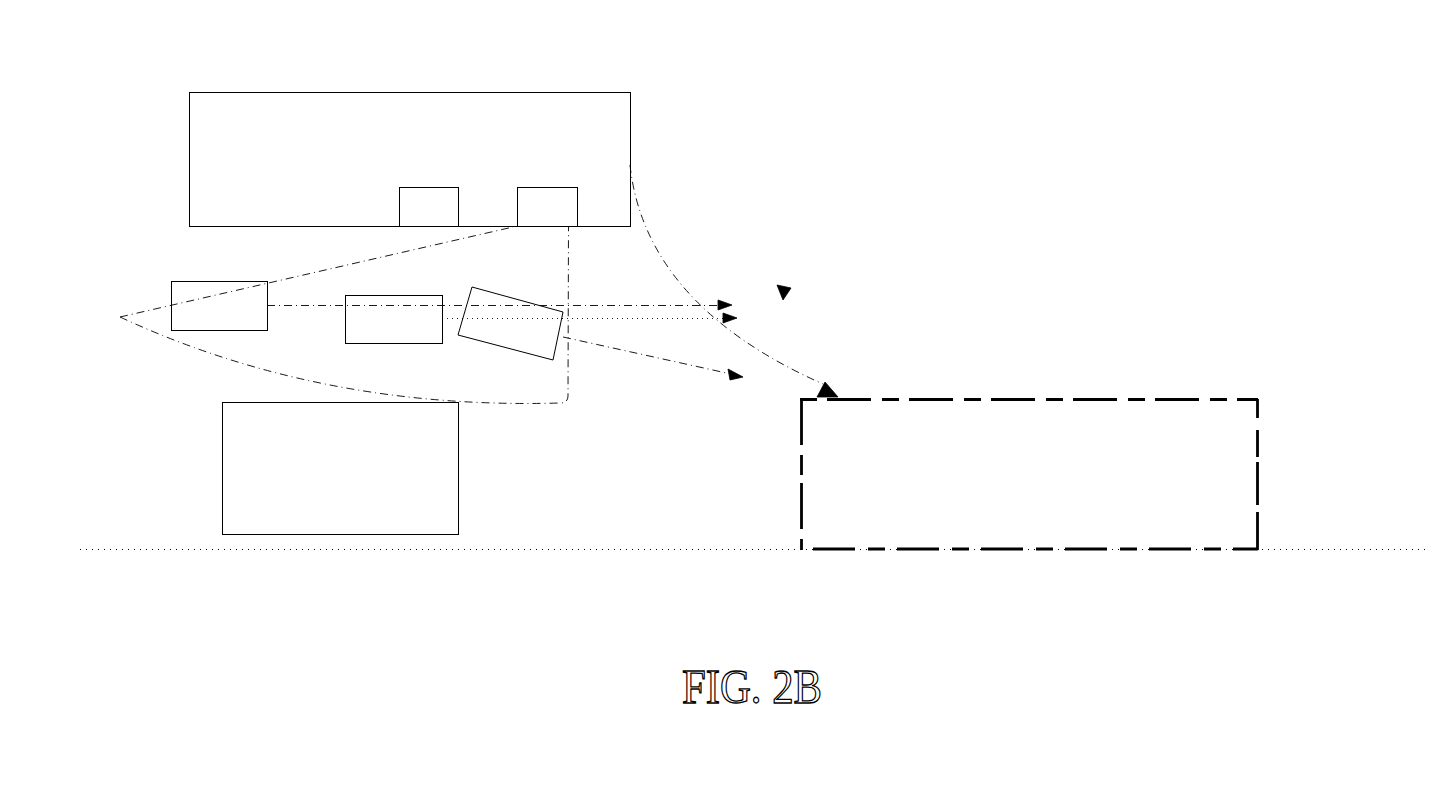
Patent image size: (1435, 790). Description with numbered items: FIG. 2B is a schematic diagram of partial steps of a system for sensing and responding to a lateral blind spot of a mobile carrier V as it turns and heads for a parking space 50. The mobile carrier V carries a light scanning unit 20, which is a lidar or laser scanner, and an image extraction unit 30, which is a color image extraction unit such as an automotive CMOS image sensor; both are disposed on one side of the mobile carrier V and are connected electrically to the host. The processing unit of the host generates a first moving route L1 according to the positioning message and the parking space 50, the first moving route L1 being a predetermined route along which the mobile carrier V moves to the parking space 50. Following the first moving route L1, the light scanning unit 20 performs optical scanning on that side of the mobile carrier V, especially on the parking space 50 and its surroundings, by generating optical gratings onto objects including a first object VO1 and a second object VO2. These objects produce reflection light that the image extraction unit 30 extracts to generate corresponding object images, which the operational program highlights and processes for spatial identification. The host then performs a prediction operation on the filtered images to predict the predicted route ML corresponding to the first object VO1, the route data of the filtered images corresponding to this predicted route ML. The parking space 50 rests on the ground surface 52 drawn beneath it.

The vehicle V is at (506, 92).
The sensor 30 is at (432, 187).
The camera 20 is at (540, 190).
The first virtual object VO1 is at (207, 281).
The second virtual object VO2 is at (222, 435).
The light path L1 is at (659, 250).
The moving line ML is at (785, 291).
The target object 50 is at (1157, 399).
The ground 52 is at (1333, 549).